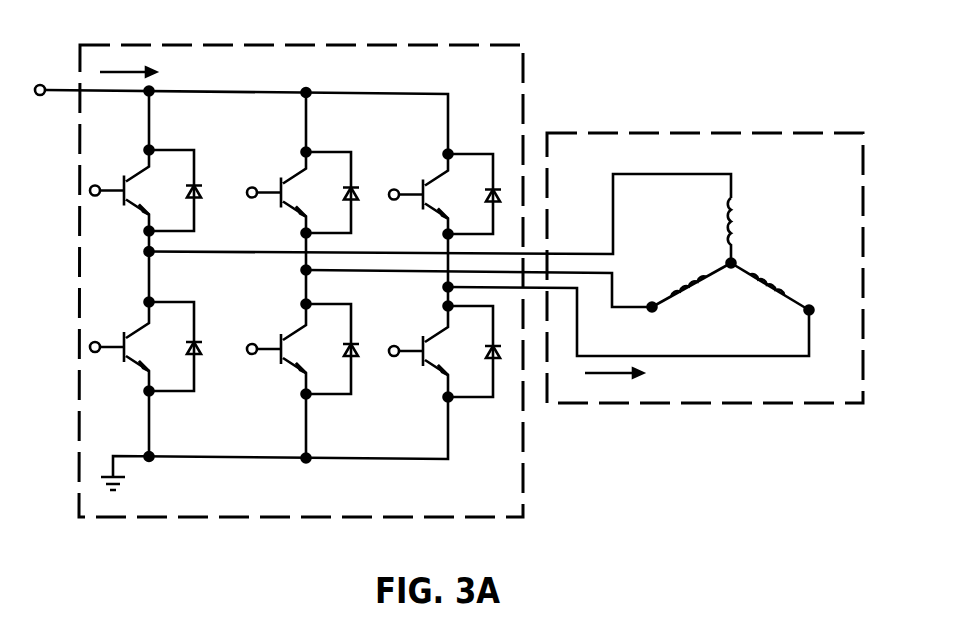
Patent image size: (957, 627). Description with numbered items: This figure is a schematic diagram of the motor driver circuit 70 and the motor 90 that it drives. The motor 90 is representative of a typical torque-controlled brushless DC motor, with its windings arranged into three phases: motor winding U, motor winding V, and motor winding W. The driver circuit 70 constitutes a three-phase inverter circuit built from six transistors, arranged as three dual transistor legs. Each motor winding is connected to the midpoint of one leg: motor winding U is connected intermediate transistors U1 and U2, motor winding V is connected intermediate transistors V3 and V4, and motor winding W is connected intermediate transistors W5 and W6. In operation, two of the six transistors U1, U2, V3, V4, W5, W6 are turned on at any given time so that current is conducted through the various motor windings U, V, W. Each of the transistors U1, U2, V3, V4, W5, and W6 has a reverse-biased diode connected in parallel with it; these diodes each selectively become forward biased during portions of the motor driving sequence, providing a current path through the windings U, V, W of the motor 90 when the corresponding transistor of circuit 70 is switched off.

The motor driver circuit 70 is at (275, 46).
The motor 90 is at (654, 125).
The transistor U1 is at (154, 191).
The transistor V3 is at (309, 193).
The transistor W5 is at (451, 194).
The transistor U2 is at (154, 347).
The transistor V4 is at (306, 349).
The transistor W6 is at (450, 352).
The motor winding U is at (744, 230).
The motor winding V is at (691, 285).
The motor winding W is at (770, 286).